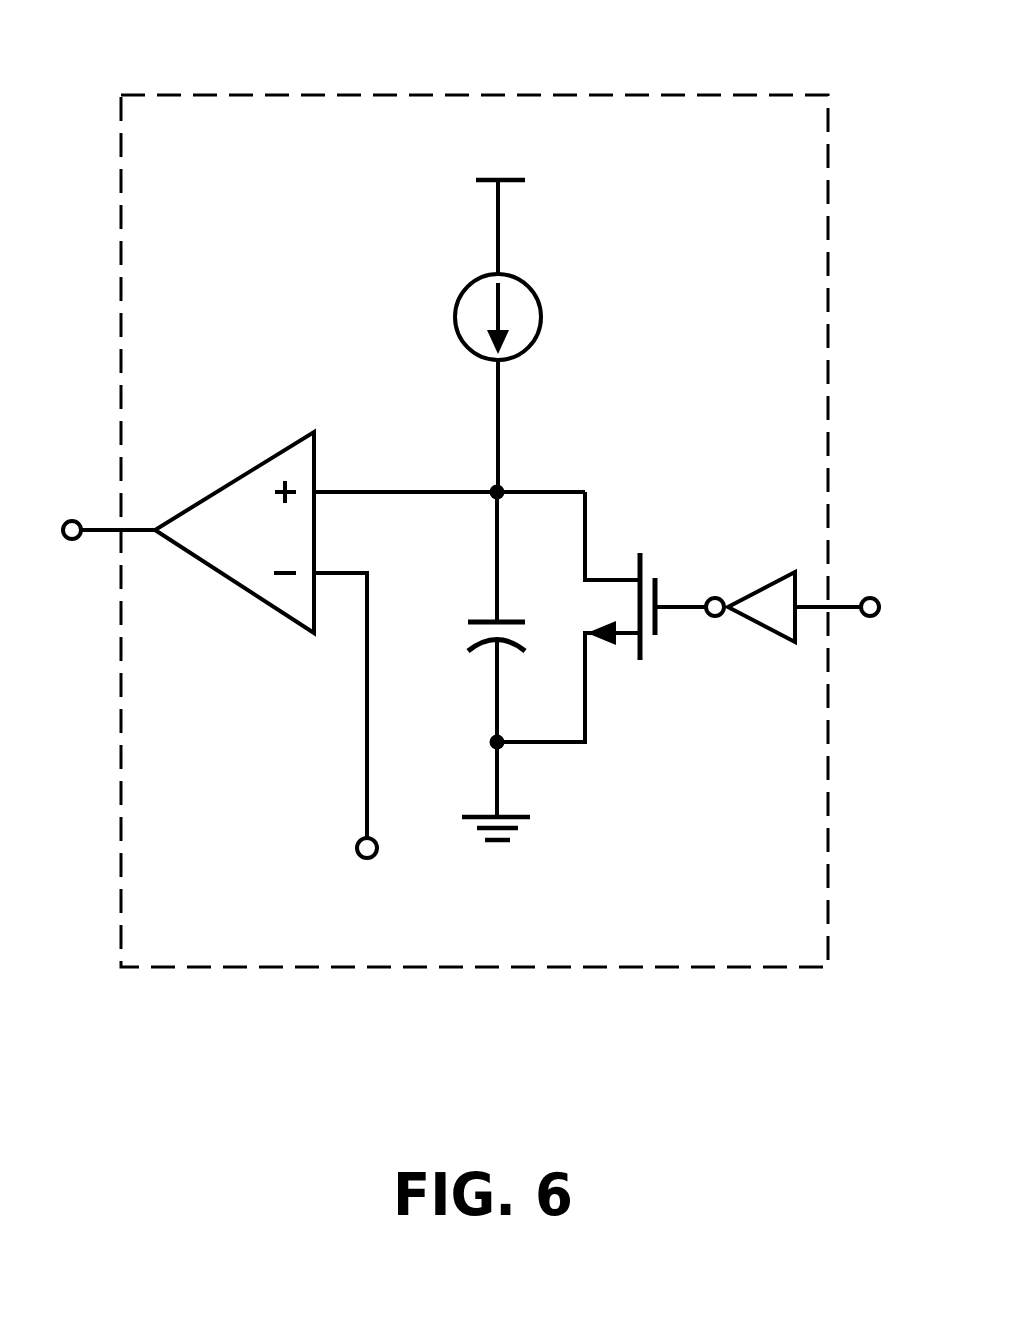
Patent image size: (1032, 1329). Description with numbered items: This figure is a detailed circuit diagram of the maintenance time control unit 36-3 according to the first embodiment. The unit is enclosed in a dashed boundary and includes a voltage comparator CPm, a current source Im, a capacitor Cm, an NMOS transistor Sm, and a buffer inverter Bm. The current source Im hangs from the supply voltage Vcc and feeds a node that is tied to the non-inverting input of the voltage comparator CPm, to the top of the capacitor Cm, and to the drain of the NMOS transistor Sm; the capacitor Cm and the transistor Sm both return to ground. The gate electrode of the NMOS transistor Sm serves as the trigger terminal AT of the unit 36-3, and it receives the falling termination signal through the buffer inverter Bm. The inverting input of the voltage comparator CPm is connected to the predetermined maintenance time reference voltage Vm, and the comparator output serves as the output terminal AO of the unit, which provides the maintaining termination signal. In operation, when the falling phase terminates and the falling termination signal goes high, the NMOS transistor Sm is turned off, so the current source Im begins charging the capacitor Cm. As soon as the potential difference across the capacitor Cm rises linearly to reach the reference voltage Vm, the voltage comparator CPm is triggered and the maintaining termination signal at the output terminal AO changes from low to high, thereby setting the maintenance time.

The maintenance time control unit 36-3 is at (667, 93).
The supply voltage Vcc is at (501, 201).
The current source Im is at (467, 294).
The voltage comparator CPm is at (260, 465).
The output terminal AO is at (91, 503).
The maintenance time reference voltage Vm is at (355, 746).
The capacitor Cm is at (474, 617).
The NMOS transistor Sm is at (654, 642).
The buffer inverter Bm is at (764, 587).
The trigger terminal AT is at (856, 580).